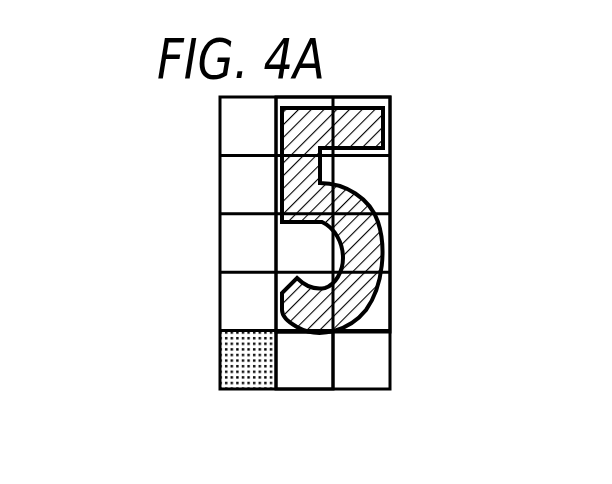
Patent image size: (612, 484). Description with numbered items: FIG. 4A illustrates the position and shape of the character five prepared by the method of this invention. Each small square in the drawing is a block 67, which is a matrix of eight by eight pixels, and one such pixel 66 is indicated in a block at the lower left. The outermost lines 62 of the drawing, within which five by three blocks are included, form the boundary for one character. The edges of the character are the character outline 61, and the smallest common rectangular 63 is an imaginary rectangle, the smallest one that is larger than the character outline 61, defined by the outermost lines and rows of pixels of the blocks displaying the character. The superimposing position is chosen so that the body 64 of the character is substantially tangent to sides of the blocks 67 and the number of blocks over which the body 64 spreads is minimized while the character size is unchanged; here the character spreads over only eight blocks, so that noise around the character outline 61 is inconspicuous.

The character outline 61 is at (372, 300).
The outermost lines 62 is at (219, 188).
The smallest common rectangular 63 is at (273, 292).
The body of the character 64 is at (384, 96).
The pixel 66 is at (250, 370).
The block 67 is at (297, 380).